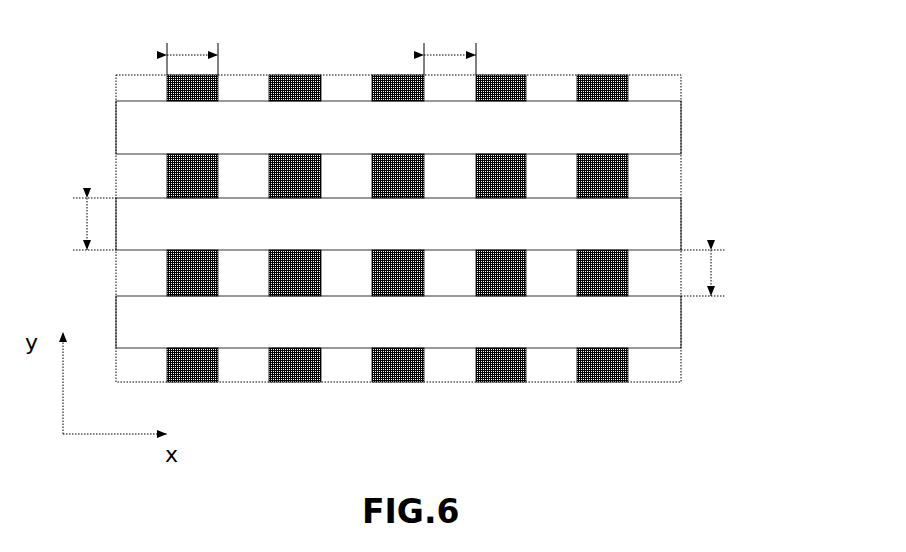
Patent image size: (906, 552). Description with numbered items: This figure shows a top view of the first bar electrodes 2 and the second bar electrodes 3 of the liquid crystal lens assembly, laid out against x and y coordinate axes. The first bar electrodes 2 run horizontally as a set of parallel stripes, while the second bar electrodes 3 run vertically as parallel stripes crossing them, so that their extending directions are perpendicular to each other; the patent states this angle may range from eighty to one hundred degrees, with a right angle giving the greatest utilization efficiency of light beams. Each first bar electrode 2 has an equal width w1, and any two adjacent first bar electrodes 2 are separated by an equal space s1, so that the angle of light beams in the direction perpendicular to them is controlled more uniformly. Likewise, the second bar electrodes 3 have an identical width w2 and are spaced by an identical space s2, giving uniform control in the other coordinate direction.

The first bar electrodes 2 is at (673, 123).
The second bar electrodes 3 is at (173, 180).
The width w1 is at (80, 224).
The width w2 is at (192, 47).
The space s1 is at (715, 273).
The space s2 is at (450, 47).